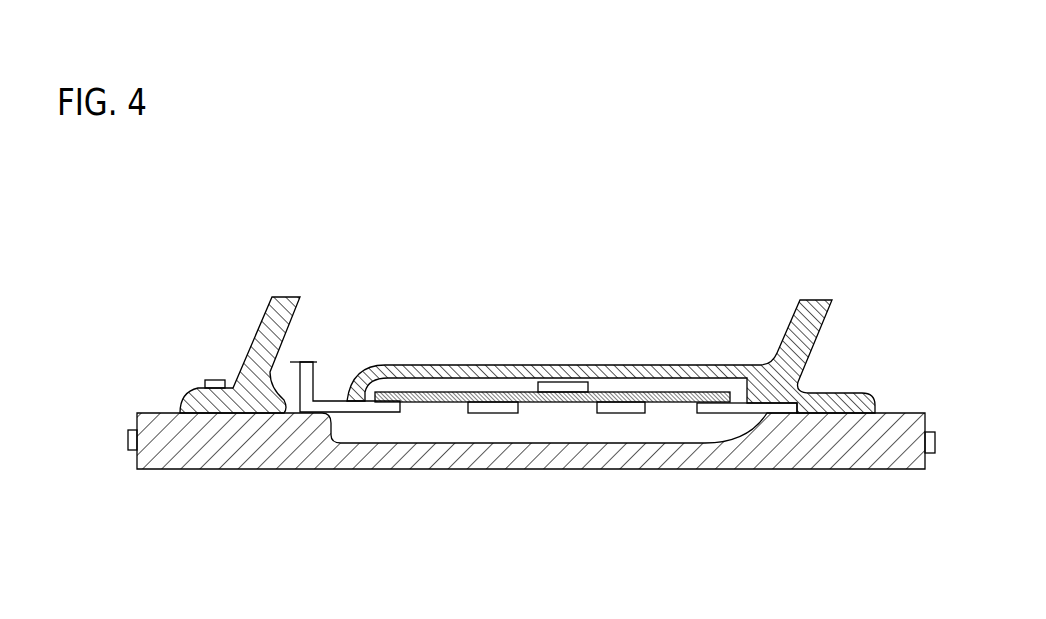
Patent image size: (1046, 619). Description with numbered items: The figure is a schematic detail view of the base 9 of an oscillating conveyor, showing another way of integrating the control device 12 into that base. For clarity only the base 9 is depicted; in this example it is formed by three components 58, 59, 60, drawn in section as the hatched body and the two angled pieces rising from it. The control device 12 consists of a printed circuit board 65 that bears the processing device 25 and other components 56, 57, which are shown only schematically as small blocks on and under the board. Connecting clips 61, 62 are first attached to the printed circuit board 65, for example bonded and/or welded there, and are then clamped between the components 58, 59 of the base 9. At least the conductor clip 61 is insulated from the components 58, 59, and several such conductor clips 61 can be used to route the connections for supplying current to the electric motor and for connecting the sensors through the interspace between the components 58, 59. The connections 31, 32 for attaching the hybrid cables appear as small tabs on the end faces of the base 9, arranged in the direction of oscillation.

The base 9 is at (415, 478).
The control device 12 is at (562, 412).
The processing device 25 is at (493, 413).
The connection 31 is at (131, 452).
The connection 32 is at (931, 455).
The component 56 is at (567, 382).
The component 57 is at (633, 413).
The component of the base 58 is at (838, 457).
The component of the base 59 is at (790, 352).
The component of the base 60 is at (292, 322).
The conductor clip 61 is at (320, 370).
The connecting clip 62 is at (748, 404).
The printed circuit board 65 is at (612, 392).